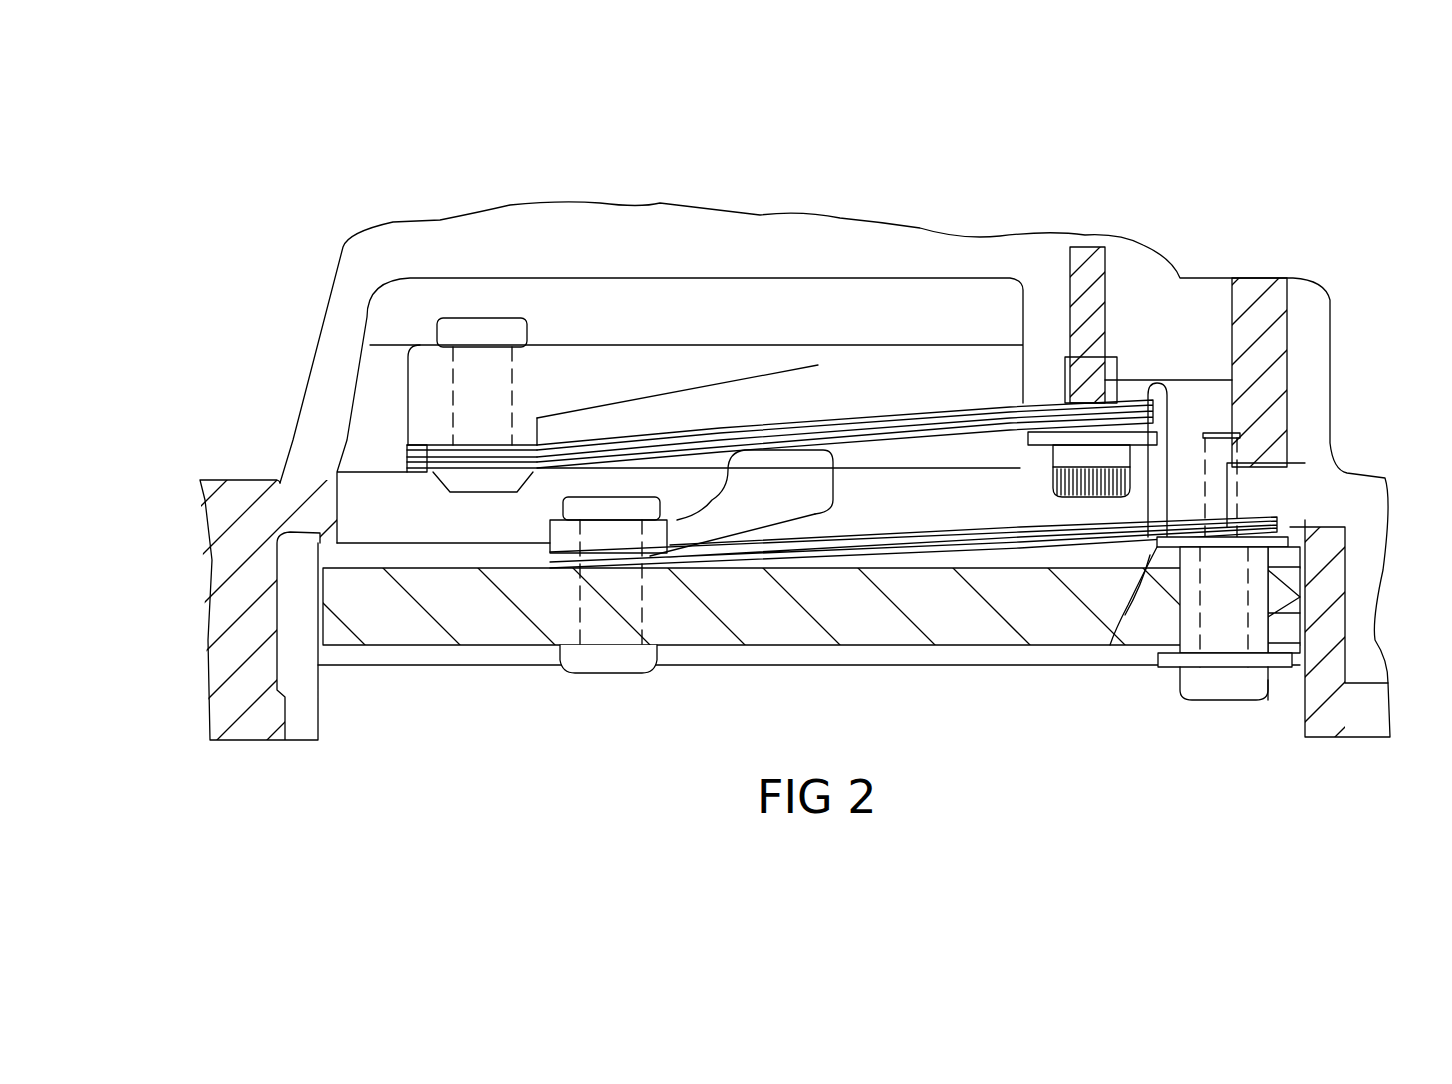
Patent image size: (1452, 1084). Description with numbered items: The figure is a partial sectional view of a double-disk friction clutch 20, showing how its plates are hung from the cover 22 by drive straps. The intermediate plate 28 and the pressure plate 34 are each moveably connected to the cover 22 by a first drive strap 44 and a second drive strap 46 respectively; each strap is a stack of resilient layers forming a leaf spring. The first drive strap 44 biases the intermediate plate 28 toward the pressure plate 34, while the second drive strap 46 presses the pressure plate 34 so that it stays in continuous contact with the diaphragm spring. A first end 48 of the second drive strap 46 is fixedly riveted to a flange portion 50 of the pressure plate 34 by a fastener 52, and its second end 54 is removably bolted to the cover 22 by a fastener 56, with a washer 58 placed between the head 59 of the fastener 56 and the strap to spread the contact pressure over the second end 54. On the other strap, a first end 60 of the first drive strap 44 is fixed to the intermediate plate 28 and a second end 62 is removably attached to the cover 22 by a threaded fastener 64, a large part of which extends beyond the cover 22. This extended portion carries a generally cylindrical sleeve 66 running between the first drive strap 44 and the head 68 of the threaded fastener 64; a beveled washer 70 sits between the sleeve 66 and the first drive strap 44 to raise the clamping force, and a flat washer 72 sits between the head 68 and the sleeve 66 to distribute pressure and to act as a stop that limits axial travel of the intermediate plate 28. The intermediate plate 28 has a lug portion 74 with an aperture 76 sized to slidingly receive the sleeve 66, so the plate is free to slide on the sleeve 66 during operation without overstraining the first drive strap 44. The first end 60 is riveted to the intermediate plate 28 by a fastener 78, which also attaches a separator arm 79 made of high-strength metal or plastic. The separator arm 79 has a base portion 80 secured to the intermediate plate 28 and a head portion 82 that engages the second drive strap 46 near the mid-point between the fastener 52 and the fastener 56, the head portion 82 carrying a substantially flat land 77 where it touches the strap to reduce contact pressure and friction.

The double-disk friction clutch 20 is at (258, 308).
The cover 22 is at (1317, 412).
The intermediate plate 28 is at (876, 660).
The pressure plate 34 is at (707, 332).
The first drive strap 44 is at (758, 560).
The second drive strap 46 is at (902, 420).
The first end of second drive strap 48 is at (410, 457).
The flange portion 50 is at (418, 375).
The fastener 52 is at (513, 332).
The second end of second drive strap 54 is at (1167, 443).
The fastener 56 is at (1040, 483).
The washer 58 is at (1167, 437).
The head of fastener 59 is at (1167, 467).
The first end of first drive strap 60 is at (530, 570).
The second end of first drive strap 62 is at (1287, 530).
The threaded fastener 64 is at (1213, 715).
The cylindrical sleeve 66 is at (1187, 632).
The head of threaded fastener 68 is at (1260, 690).
The washer 70 is at (1155, 598).
The flat washer 72 is at (1172, 660).
The lug portion 74 is at (1150, 600).
The aperture 76 is at (1273, 593).
The flat land 77 is at (780, 450).
The fastener 78 is at (590, 660).
The separator arm 79 is at (843, 512).
The base portion 80 is at (563, 532).
The head portion 82 is at (810, 463).